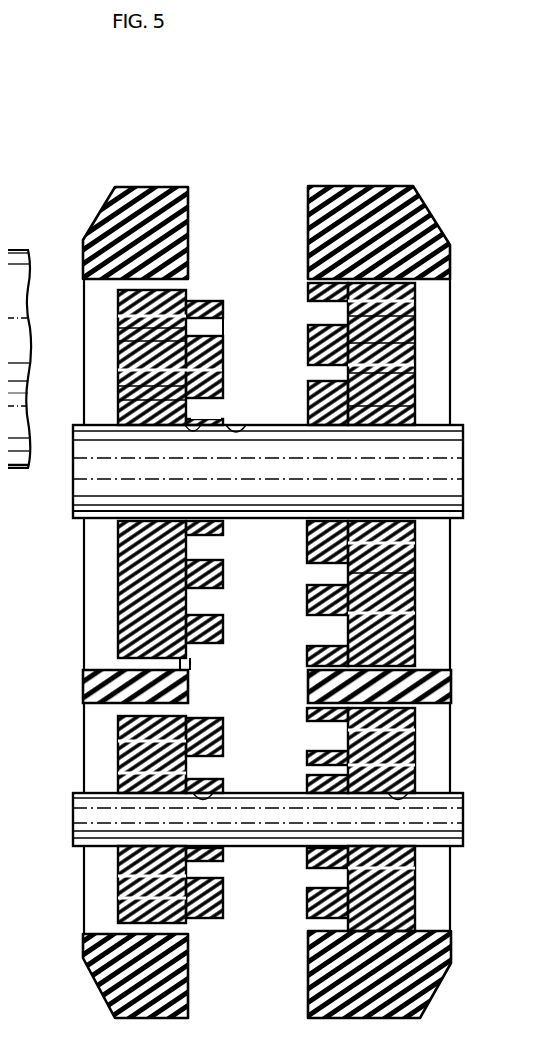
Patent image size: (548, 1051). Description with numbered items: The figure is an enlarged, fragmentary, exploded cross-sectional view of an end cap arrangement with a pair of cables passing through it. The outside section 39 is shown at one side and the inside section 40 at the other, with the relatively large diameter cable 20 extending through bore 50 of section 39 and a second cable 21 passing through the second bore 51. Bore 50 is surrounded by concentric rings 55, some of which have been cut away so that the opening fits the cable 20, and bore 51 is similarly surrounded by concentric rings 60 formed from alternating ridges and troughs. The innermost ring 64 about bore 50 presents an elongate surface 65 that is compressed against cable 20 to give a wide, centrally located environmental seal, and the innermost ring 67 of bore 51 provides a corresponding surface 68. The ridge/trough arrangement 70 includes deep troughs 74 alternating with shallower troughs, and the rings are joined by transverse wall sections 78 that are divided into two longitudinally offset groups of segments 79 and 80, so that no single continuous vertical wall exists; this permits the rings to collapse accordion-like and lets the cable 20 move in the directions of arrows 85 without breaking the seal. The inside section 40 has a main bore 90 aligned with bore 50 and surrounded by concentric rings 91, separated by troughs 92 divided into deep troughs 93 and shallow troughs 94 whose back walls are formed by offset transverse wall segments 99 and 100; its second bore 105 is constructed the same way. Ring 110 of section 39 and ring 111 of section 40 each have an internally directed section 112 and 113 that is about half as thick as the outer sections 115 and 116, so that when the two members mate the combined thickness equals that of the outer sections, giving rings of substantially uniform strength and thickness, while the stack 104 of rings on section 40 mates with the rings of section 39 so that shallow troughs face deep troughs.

The cable 20 is at (78, 433).
The second rail 21 is at (72, 801).
The outside end cap section 39 is at (146, 179).
The inside section 40 is at (370, 178).
The bore 50 is at (236, 417).
The bore 51 is at (215, 838).
The concentric rings 55 is at (130, 294).
The concentric rings 60 is at (112, 716).
The innermost ring 64 is at (160, 393).
The elongate surface 65 is at (206, 410).
The innermost ring 67 is at (215, 783).
The surface 68 is at (205, 785).
The ridge/trough arrangement 70 is at (100, 331).
The deep troughs 74 is at (175, 540).
The transverse wall sections 78 is at (217, 305).
The wall segments 79 is at (175, 332).
The wall segments 80 is at (210, 567).
The arrows 85 is at (465, 405).
The main bore 90 is at (372, 420).
The concentric rings 91 is at (19, 383).
The troughs 92 is at (19, 359).
The deep troughs 93 is at (380, 340).
The shallow troughs 94 is at (380, 300).
The transverse wall segments 99 is at (320, 334).
The transverse wall segments 100 is at (325, 362).
The plate stack 104 is at (310, 291).
The second bore 105 is at (393, 786).
The ring 110 is at (165, 277).
The ring 111 is at (379, 260).
The internally directed section 112 is at (190, 290).
The internally directed section 113 is at (330, 300).
The outer section 115 is at (120, 320).
The outer section 116 is at (395, 276).